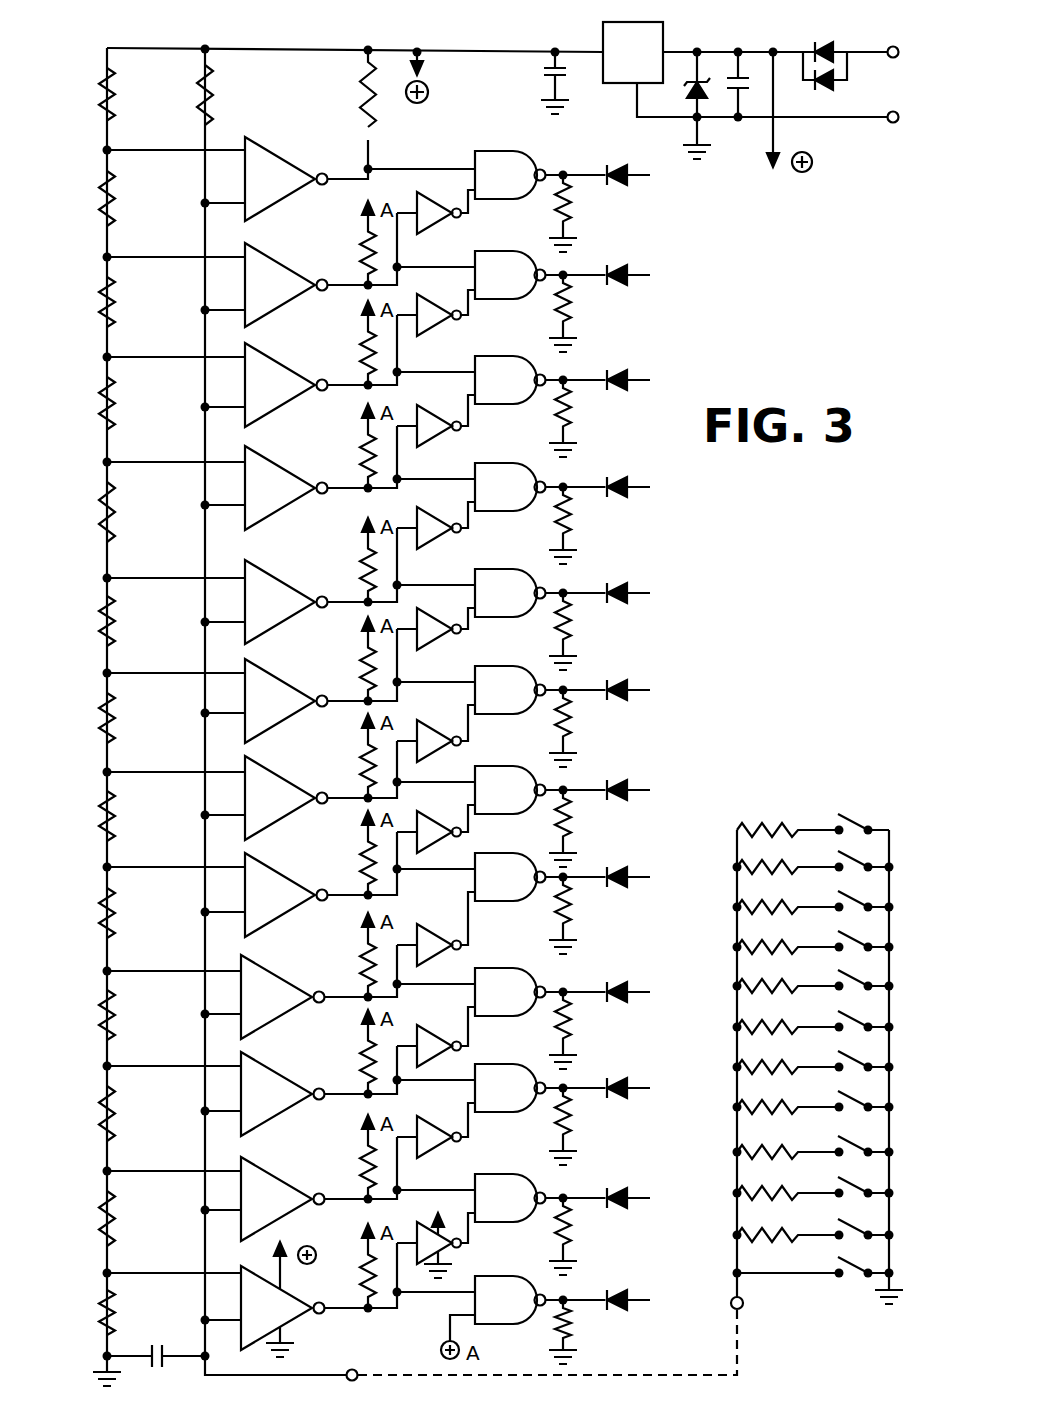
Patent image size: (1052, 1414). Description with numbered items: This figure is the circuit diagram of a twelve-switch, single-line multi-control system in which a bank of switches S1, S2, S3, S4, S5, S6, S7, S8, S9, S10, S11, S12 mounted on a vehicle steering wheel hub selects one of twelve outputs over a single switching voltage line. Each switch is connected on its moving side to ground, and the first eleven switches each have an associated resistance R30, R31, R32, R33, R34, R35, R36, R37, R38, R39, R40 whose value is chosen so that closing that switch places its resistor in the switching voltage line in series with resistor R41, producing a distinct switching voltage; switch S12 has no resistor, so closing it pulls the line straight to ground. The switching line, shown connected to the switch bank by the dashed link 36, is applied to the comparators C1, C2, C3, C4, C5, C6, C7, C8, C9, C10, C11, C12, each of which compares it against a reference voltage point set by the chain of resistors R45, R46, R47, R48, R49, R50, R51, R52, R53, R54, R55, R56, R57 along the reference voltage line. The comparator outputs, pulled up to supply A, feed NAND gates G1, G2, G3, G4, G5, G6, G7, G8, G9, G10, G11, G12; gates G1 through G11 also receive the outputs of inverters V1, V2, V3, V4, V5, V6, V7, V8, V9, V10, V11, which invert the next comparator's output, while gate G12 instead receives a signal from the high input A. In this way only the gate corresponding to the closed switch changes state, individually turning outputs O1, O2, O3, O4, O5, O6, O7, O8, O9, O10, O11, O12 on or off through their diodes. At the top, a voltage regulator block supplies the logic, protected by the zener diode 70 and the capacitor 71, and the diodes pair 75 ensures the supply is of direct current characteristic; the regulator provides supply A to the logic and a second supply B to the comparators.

The resistor R41 is at (212, 95).
The resistor R45 is at (100, 99).
The resistor R46 is at (100, 203).
The resistor R47 is at (100, 306).
The resistor R48 is at (100, 407).
The resistor R49 is at (100, 517).
The resistor R50 is at (100, 624).
The resistor R51 is at (100, 722).
The resistor R52 is at (100, 820).
The resistor R53 is at (100, 917).
The resistor R54 is at (100, 1019).
The resistor R55 is at (100, 1118).
The resistor R56 is at (100, 1223).
The resistor R57 is at (100, 1316).
The comparator C1 is at (286, 179).
The comparator C2 is at (286, 285).
The comparator C3 is at (286, 385).
The comparator C4 is at (286, 488).
The comparator C5 is at (286, 602).
The comparator C6 is at (286, 701).
The comparator C7 is at (286, 798).
The comparator C8 is at (286, 895).
The comparator C9 is at (283, 997).
The comparator C10 is at (283, 1094).
The comparator C11 is at (283, 1199).
The comparator C12 is at (283, 1299).
The inverter V1 is at (441, 228).
The inverter V2 is at (441, 330).
The inverter V3 is at (441, 441).
The inverter V4 is at (441, 543).
The inverter V5 is at (441, 644).
The inverter V6 is at (441, 756).
The inverter V7 is at (441, 847).
The inverter V8 is at (441, 960).
The inverter V9 is at (441, 1061).
The inverter V10 is at (441, 1152).
The inverter V11 is at (441, 1258).
The NAND gate G1 is at (510, 175).
The NAND gate G2 is at (510, 275).
The NAND gate G3 is at (510, 380).
The NAND gate G4 is at (510, 487).
The NAND gate G5 is at (510, 593).
The NAND gate G6 is at (510, 690).
The NAND gate G7 is at (510, 790).
The NAND gate G8 is at (510, 877).
The NAND gate G9 is at (510, 992).
The NAND gate G10 is at (510, 1088).
The NAND gate G11 is at (510, 1198).
The NAND gate G12 is at (510, 1300).
The output O1 is at (649, 175).
The output O2 is at (649, 275).
The output O3 is at (649, 380).
The output O4 is at (649, 487).
The output O5 is at (649, 593).
The output O6 is at (649, 690).
The output O7 is at (649, 790).
The output O8 is at (636, 889).
The output O9 is at (636, 1004).
The output O10 is at (640, 1100).
The output O11 is at (640, 1210).
The output O12 is at (642, 1312).
The resistance R30 is at (781, 833).
The resistance R31 is at (781, 870).
The resistance R32 is at (781, 910).
The resistance R33 is at (781, 950).
The resistance R34 is at (781, 989).
The resistance R35 is at (781, 1030).
The resistance R36 is at (781, 1070).
The resistance R37 is at (781, 1110).
The resistance R38 is at (781, 1155).
The resistance R39 is at (781, 1196).
The resistance R40 is at (781, 1238).
The switch S1 is at (882, 806).
The switch S2 is at (856, 862).
The switch S3 is at (856, 902).
The switch S4 is at (856, 942).
The switch S5 is at (856, 981).
The switch S6 is at (856, 1022).
The switch S7 is at (856, 1062).
The switch S8 is at (856, 1102).
The switch S9 is at (856, 1147).
The switch S10 is at (856, 1188).
The switch S11 is at (856, 1230).
The switch S12 is at (856, 1268).
The zener diode 70 is at (687, 102).
The capacitor 71 is at (756, 92).
The diodes pair 75 is at (849, 88).
The connection cable 36 is at (531, 1380).
The high input A is at (417, 91).
The supply voltage B is at (789, 126).